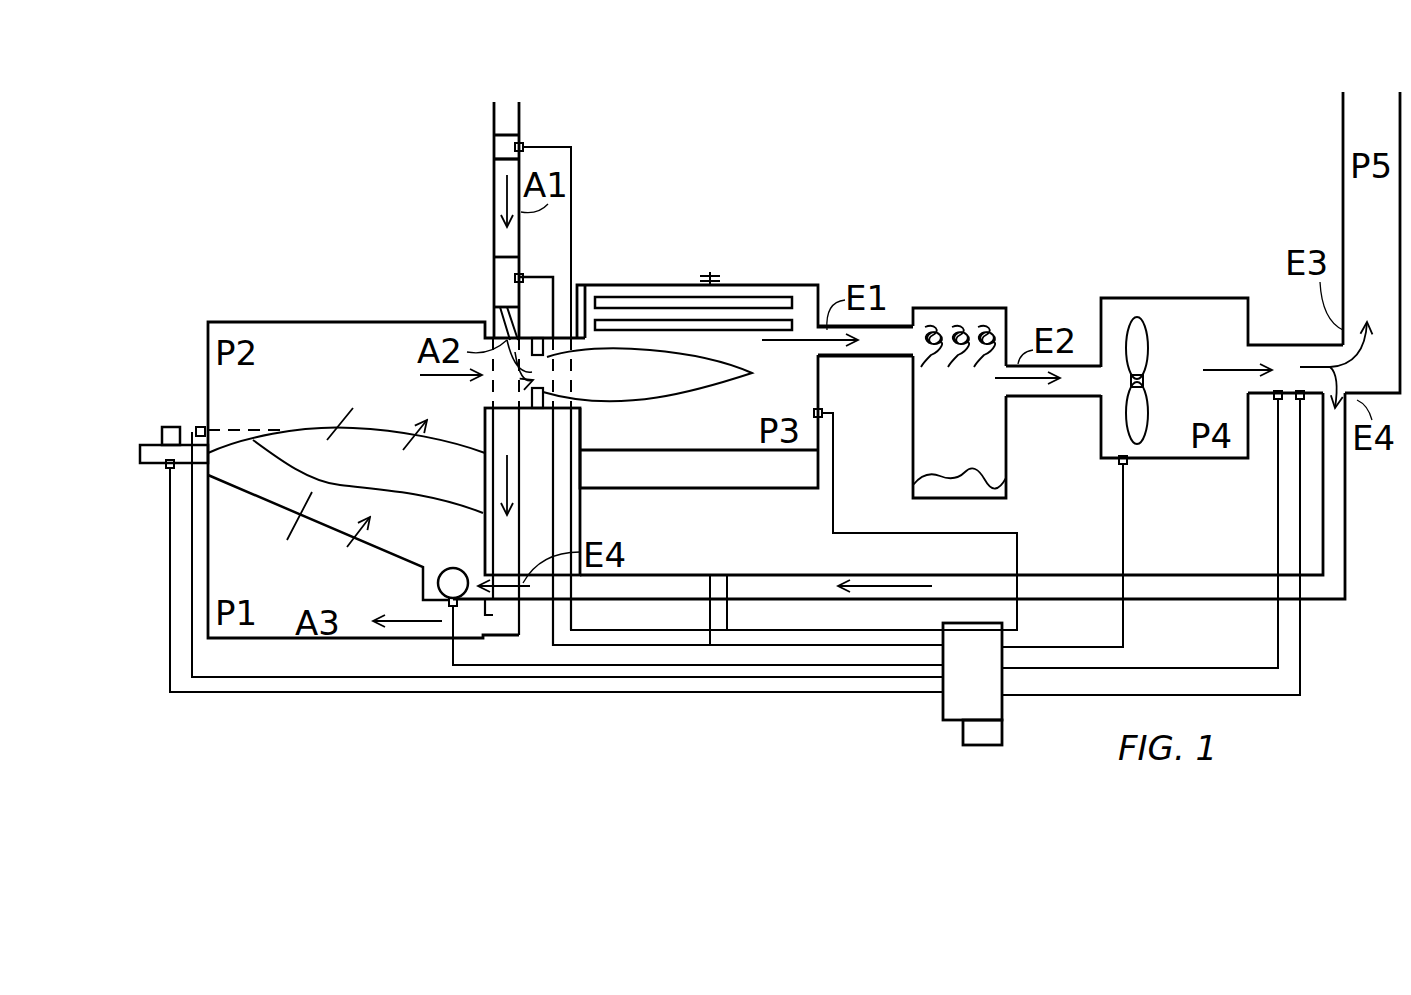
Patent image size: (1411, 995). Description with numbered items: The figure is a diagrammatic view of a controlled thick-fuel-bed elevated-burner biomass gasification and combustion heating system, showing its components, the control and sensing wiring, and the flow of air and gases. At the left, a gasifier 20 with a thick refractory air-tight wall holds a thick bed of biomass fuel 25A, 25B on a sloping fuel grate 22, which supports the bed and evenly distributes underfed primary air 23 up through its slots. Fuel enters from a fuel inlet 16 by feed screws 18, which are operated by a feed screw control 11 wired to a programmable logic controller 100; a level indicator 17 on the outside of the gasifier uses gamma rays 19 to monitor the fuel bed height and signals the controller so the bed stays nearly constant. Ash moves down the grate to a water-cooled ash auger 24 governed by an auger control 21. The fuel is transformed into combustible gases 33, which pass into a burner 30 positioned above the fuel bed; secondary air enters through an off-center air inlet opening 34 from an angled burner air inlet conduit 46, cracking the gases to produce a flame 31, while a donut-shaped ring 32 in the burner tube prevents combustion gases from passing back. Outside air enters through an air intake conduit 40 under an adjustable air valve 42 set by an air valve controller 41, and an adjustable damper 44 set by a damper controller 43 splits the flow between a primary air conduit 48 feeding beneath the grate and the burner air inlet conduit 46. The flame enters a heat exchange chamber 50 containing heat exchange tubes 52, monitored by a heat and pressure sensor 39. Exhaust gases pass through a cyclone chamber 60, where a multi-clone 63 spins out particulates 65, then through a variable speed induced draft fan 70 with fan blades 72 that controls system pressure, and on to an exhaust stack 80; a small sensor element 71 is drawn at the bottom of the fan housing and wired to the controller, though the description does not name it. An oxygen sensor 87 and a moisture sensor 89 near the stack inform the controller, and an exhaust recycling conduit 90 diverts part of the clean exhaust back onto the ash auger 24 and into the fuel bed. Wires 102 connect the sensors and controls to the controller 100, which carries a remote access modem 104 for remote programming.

The feed screw control 11 is at (171, 470).
The fuel inlet 16 is at (162, 438).
The level indicator 17 is at (197, 428).
The feed screws 18 is at (140, 450).
The gamma rays 19 is at (278, 428).
The gasifier 20 is at (290, 320).
The auger control 21 is at (449, 602).
The fuel grate 22 is at (250, 486).
The primary air 23 is at (285, 523).
The ash auger 24 is at (438, 582).
The biomass fuel 25A is at (346, 445).
The biomass fuel 25B is at (375, 520).
The burner 30 is at (577, 285).
The flame 31 is at (724, 383).
The donut-shaped ring 32 is at (547, 393).
The combustible gases 33 is at (442, 378).
The air inlet opening 34 is at (485, 330).
The heat and pressure sensor 39 is at (822, 411).
The air intake conduit 40 is at (494, 110).
The air valve controller 41 is at (523, 146).
The adjustable air valve 42 is at (494, 157).
The damper controller 43 is at (521, 276).
The adjustable damper 44 is at (483, 257).
The angled burner air inlet conduit 46 is at (494, 300).
The primary air conduit 48 is at (520, 508).
The heat exchange chamber 50 is at (760, 284).
The heat exchange tubes 52 is at (793, 304).
The cyclone chamber 60 is at (983, 307).
The multi-clone 63 is at (930, 368).
The particulates 65 is at (928, 476).
The variable speed induced draft fan 70 is at (1165, 297).
The fan sensor 71 is at (1127, 464).
The fan blades 72 is at (1147, 355).
The exhaust stack 80 is at (1342, 225).
The oxygen sensor 87 is at (1278, 399).
The moisture sensor 89 is at (1300, 391).
The exhaust recycling conduit 90 is at (1345, 552).
The programmable logic controller 100 is at (945, 715).
The wires 102 is at (453, 665).
The remote access modem 104 is at (1032, 738).